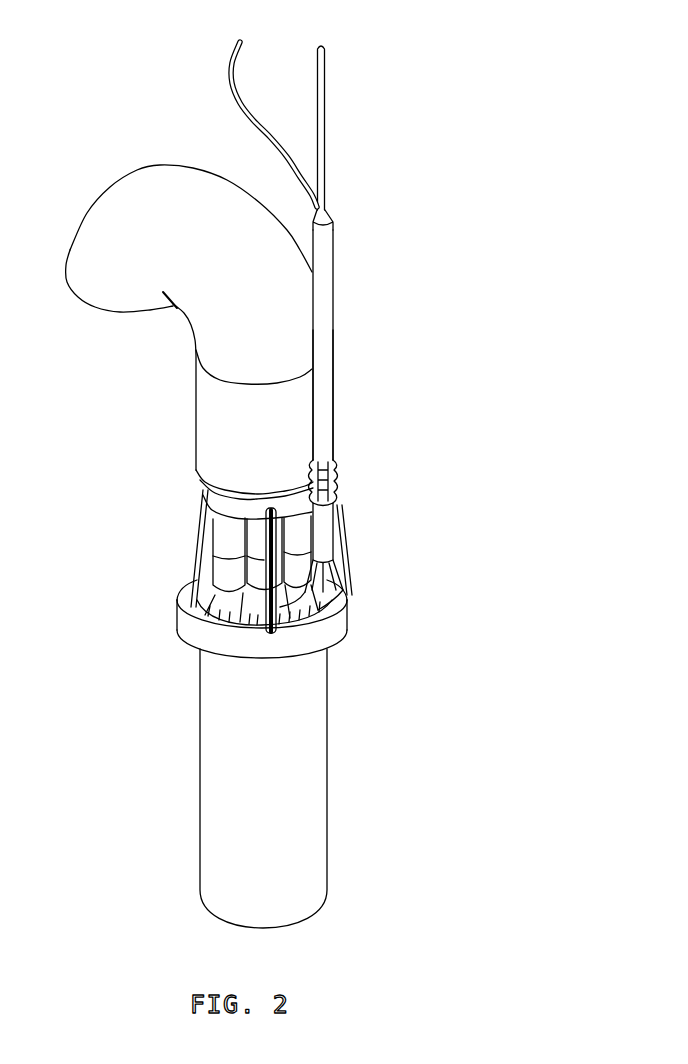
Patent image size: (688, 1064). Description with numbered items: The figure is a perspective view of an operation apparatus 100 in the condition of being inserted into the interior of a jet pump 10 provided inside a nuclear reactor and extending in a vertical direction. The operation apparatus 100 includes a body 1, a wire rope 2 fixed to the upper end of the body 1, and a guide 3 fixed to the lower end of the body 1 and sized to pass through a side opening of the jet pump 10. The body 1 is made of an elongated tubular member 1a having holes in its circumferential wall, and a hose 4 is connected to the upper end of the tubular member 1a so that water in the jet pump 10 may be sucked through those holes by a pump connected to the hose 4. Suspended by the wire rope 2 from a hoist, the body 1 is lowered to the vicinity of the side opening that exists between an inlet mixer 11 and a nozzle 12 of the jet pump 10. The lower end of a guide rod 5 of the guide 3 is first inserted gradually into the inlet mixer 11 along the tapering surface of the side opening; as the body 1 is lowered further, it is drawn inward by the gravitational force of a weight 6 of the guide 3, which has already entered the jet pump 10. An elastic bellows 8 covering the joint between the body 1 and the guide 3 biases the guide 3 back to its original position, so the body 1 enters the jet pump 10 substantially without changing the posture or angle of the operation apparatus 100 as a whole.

The operation apparatus 100 is at (318, 485).
The body 1 is at (333, 352).
The tubular member 1a is at (323, 410).
The wire rope 2 is at (325, 143).
The hose 4 is at (253, 134).
The bellows 8 is at (343, 462).
The guide 3 is at (378, 537).
The weight 6 is at (320, 528).
The guide rod 5 is at (356, 564).
The nozzle 12 is at (237, 547).
The inlet mixer 11 is at (195, 588).
The jet pump 10 is at (168, 622).